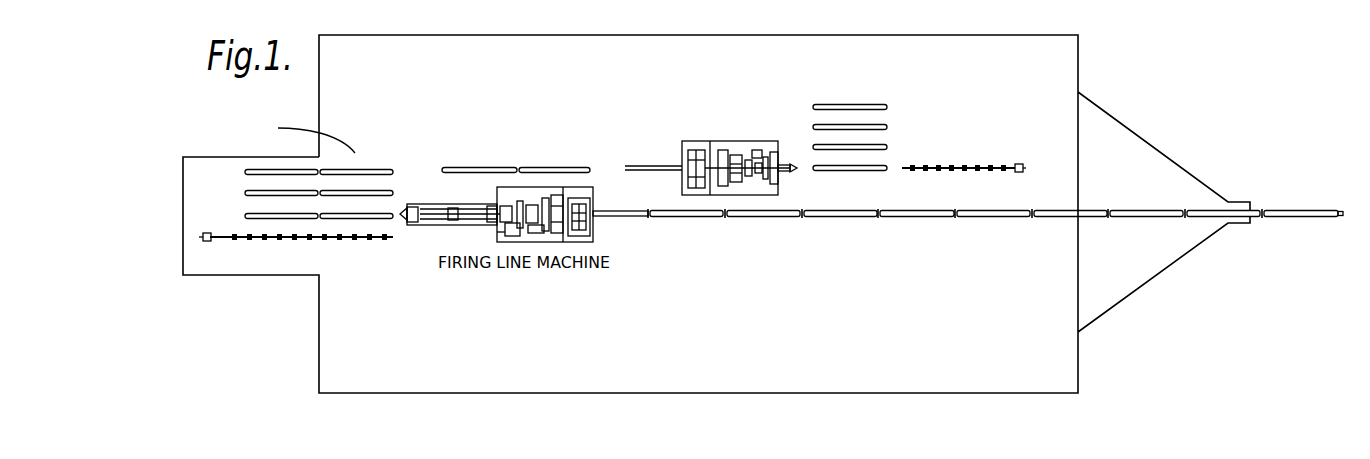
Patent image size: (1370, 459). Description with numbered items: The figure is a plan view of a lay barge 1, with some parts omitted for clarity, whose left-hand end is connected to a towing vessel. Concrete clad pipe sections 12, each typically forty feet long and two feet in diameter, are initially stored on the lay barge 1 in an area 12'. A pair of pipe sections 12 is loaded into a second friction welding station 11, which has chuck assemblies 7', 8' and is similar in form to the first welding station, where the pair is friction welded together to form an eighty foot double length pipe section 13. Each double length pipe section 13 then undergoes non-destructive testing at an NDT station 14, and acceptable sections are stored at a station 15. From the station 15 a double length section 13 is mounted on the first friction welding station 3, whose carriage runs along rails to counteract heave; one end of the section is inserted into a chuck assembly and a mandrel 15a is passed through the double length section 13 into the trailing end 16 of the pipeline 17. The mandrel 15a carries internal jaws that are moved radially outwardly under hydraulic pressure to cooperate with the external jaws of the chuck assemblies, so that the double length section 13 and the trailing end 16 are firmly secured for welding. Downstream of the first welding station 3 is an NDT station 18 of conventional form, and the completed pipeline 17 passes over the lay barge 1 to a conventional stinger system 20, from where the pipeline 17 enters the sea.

The lay barge 1 is at (402, 386).
The first friction welding station 3 is at (524, 284).
The chuck assembly 7' is at (784, 190).
The chuck assembly 8' is at (674, 190).
The second friction welding station 11 is at (764, 96).
The concrete clad pipe sections 12 is at (890, 136).
The storage area 12' is at (879, 81).
The double length pipe section 13 is at (245, 193).
The NDT station 14 is at (468, 103).
The station 15 is at (378, 148).
The mandrel 15a is at (345, 239).
The trailing end 16 is at (618, 218).
The pipeline 17 is at (828, 218).
The NDT station 18 is at (708, 286).
The stinger system 20 is at (1204, 272).